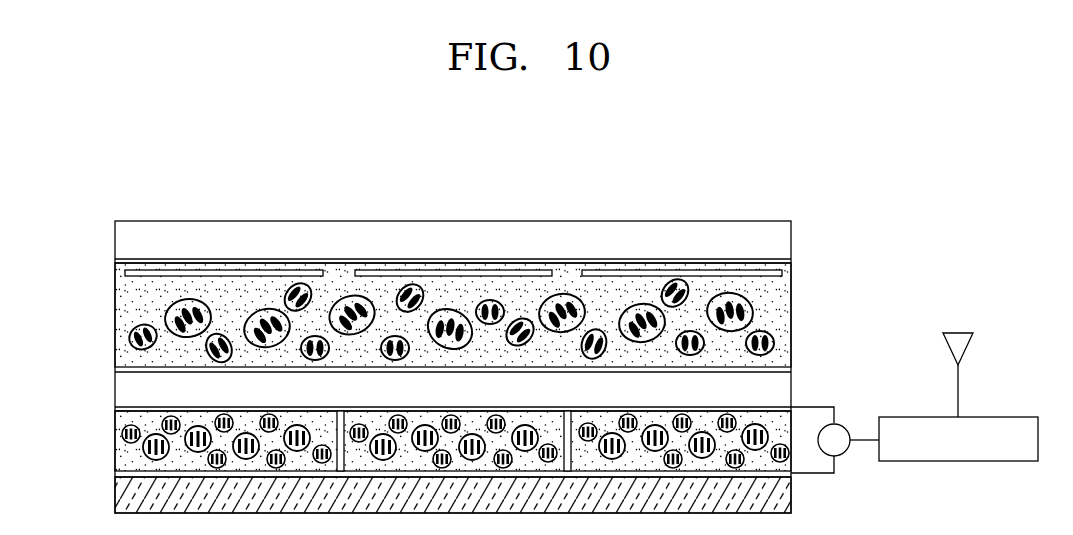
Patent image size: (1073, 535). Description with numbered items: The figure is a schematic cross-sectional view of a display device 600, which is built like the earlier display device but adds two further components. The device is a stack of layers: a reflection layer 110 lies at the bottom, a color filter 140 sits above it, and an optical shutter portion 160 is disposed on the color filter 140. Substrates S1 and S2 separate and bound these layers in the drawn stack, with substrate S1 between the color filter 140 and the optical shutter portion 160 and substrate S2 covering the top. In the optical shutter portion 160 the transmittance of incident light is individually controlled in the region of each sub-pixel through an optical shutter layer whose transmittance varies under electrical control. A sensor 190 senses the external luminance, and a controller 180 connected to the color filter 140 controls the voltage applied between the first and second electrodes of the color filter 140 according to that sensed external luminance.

The display device 600 is at (789, 192).
The second substrate S2 is at (115, 241).
The optical shutter portion 160 is at (111, 262).
The first substrate S1 is at (115, 388).
The color filter 140 is at (111, 405).
The reflection layer 110 is at (118, 495).
The controller 180 is at (958, 461).
The sensor 190 is at (944, 351).